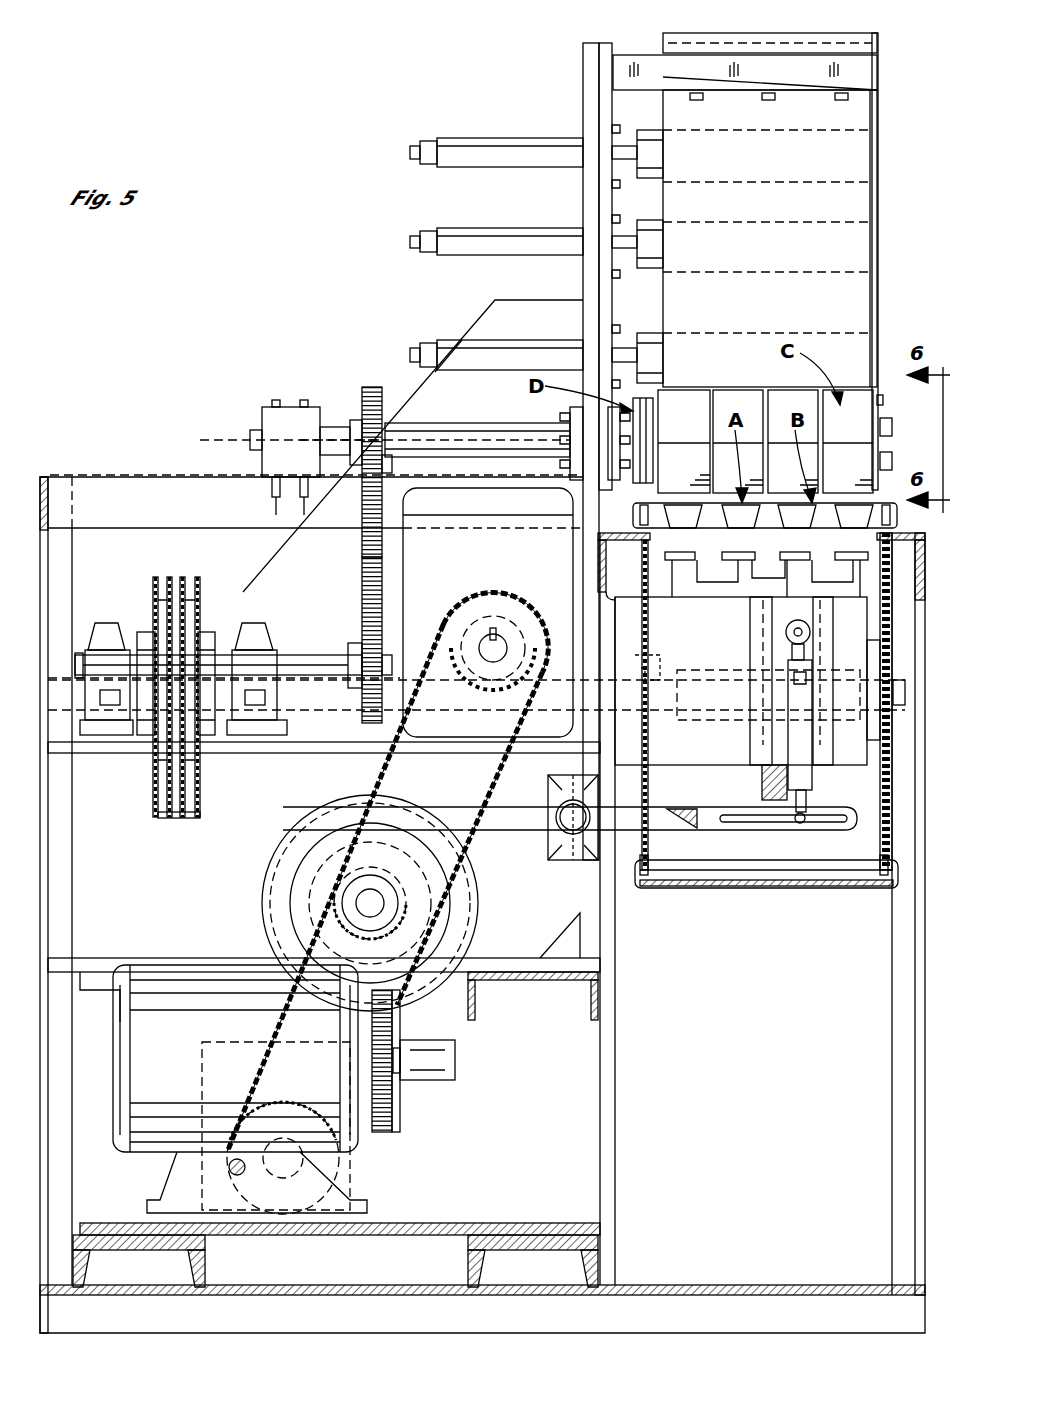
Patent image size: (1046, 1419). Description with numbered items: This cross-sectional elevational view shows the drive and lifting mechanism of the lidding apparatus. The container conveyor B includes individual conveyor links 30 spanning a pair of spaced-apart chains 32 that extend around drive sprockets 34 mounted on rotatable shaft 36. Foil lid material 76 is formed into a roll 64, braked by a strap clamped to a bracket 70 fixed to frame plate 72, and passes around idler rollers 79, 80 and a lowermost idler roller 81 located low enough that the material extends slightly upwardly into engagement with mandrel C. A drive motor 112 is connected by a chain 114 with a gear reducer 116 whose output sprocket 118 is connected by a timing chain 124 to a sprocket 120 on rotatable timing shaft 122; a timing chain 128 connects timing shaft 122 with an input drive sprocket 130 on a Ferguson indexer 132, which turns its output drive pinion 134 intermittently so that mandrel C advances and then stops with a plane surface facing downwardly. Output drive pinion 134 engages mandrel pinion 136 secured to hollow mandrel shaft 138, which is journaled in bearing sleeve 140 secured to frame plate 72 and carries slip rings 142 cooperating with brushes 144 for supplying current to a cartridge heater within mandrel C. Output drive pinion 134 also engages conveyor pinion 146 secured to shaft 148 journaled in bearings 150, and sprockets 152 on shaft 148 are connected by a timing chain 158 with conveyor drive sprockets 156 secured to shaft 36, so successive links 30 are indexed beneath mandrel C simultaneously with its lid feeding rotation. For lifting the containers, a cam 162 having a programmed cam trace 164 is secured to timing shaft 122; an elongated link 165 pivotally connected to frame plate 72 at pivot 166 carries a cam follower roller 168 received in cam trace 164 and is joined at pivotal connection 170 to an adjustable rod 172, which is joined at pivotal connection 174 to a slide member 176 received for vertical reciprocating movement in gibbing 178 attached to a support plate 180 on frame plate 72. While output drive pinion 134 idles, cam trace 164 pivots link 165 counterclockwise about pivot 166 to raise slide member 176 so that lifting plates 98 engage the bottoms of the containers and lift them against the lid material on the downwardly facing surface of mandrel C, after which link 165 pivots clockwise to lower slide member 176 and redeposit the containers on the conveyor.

The conveyor links 30 is at (650, 503).
The chains 32 is at (648, 875).
The drive sprockets 34 is at (642, 560).
The rotatable shaft 36 is at (905, 690).
The roll 64 is at (878, 50).
The bracket 70 is at (870, 72).
The frame plate 72 is at (583, 45).
The foil lid material 76 is at (877, 35).
The idler roller 79 is at (648, 220).
The idler roller 80 is at (648, 130).
The lowermost idler roller 81 is at (650, 333).
The lifting plates 98 is at (728, 555).
The drive motor 112 is at (145, 1152).
The chain 114 is at (392, 1125).
The gear reducer 116 is at (205, 1057).
The output sprocket 118 is at (295, 1105).
The sprocket 120 is at (410, 903).
The timing shaft 122 is at (345, 895).
The timing chain 124 is at (405, 990).
The timing chain 128 is at (495, 765).
The input drive sprocket 130 is at (505, 605).
The Ferguson indexer 132 is at (488, 612).
The output drive pinion 134 is at (372, 512).
The mandrel pinion 136 is at (372, 387).
The hollow mandrel shaft 138 is at (330, 427).
The bearing sleeve 140 is at (450, 423).
The slip rings 142 is at (302, 400).
The brushes 144 is at (300, 488).
The conveyor pinion 146 is at (362, 620).
The shaft 148 is at (325, 655).
The bearings 150 is at (102, 628).
The sprockets 152 is at (185, 614).
The conveyor drive sprockets 156 is at (190, 577).
The timing chain 158 is at (178, 818).
The cam 162 is at (478, 885).
The cam trace 164 is at (455, 897).
The elongated link 165 is at (665, 830).
The pivot 166 is at (556, 835).
The cam follower roller 168 is at (393, 805).
The pivotal connection 170 is at (803, 824).
The adjustable rod 172 is at (812, 775).
The pivotal connection 174 is at (786, 634).
The slide member 176 is at (762, 782).
The gibbing 178 is at (760, 612).
The support plate 180 is at (680, 760).